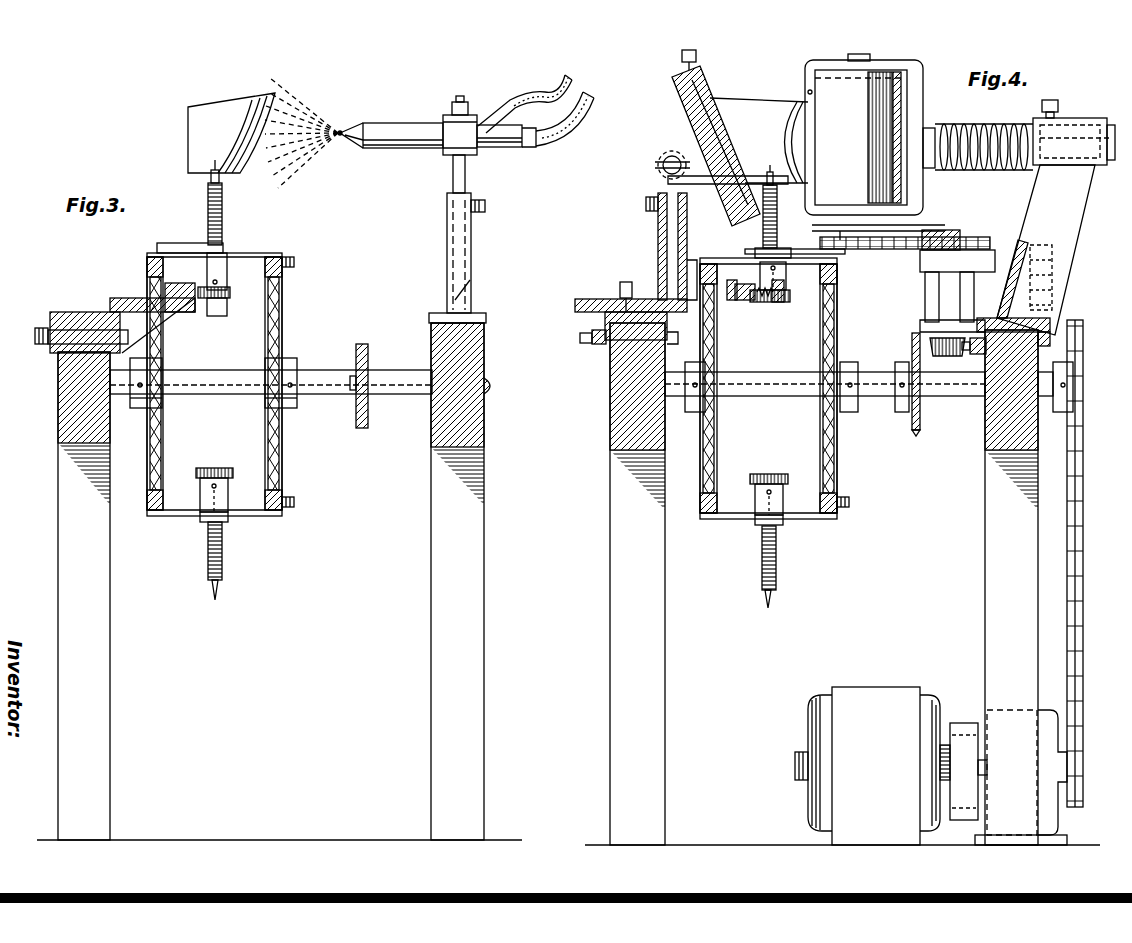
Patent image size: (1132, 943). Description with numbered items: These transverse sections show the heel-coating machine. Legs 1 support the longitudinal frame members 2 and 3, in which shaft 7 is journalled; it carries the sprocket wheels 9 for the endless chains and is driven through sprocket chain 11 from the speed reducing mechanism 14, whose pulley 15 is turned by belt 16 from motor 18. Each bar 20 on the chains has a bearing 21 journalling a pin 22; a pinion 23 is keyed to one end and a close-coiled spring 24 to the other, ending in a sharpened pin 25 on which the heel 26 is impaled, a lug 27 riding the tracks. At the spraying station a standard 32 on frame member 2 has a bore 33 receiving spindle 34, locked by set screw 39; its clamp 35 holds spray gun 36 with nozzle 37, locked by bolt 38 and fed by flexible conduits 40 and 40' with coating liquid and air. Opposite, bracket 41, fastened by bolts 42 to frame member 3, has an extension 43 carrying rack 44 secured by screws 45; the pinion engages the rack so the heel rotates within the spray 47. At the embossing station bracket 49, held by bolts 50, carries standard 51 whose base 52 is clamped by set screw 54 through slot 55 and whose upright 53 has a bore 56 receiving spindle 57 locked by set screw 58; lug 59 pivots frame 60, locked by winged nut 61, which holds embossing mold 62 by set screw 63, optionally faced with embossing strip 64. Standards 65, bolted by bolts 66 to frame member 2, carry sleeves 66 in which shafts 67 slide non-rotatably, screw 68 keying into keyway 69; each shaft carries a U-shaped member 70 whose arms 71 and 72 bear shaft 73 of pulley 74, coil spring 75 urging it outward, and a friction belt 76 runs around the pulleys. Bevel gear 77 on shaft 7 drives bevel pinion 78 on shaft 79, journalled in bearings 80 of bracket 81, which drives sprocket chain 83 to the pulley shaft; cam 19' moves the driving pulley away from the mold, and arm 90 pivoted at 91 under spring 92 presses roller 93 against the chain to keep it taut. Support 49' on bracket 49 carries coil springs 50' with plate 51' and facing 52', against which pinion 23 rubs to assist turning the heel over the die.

In FIG. 3, the legs 1 is at (432, 598).
In FIG. 4, the legs 1 is at (985, 598).
In FIG. 3, the frame member 2 is at (486, 428).
In FIG. 4, the frame member 2 is at (985, 442).
In FIG. 3, the frame member 3 is at (58, 421).
In FIG. 4, the frame member 3 is at (610, 411).
In FIG. 3, the shaft 7 is at (405, 392).
In FIG. 4, the shaft 7 is at (963, 396).
In FIG. 3, the sprocket wheels 9 is at (150, 283).
In FIG. 4, the sprocket wheels 9 is at (820, 416).
In FIG. 4, the sprocket chain 11 is at (1067, 637).
In FIG. 4, the speed reducing mechanism 14 is at (1002, 708).
In FIG. 4, the pulley 15 is at (962, 790).
In FIG. 4, the belt 16 is at (960, 746).
In FIG. 4, the motor 18 is at (863, 687).
In FIG. 3, the cam 19' is at (312, 375).
In FIG. 4, the cam 19' is at (862, 487).
In FIG. 3, the bars 20 is at (240, 514).
In FIG. 4, the bars 20 is at (758, 258).
In FIG. 3, the bearing 21 is at (228, 494).
In FIG. 4, the bearing 21 is at (786, 272).
In FIG. 3, the pin 22 is at (200, 517).
In FIG. 4, the pin 22 is at (755, 503).
In FIG. 3, the pinion 23 is at (232, 297).
In FIG. 4, the pinion 23 is at (790, 292).
In FIG. 3, the coil spring 24 is at (224, 205).
In FIG. 4, the coil spring 24 is at (763, 222).
In FIG. 3, the sharpened pin 25 is at (222, 178).
In FIG. 4, the sharpened pin 25 is at (768, 178).
In FIG. 3, the heel 26 is at (181, 150).
In FIG. 4, the heel 26 is at (766, 137).
In FIG. 3, the lug 27 is at (166, 245).
In FIG. 4, the lug 27 is at (790, 250).
In FIG. 3, the standard 32 is at (472, 240).
In FIG. 3, the central bore 33 is at (462, 292).
In FIG. 3, the spindle 34 is at (466, 170).
In FIG. 3, the clamp 35 is at (445, 118).
In FIG. 3, the spray gun 36 is at (385, 122).
In FIG. 3, the nozzle 37 is at (345, 128).
In FIG. 3, the bolt 38 is at (464, 100).
In FIG. 3, the set screw 39 is at (486, 206).
In FIG. 3, the flexible conduit 40 is at (561, 123).
In FIG. 3, the flexible conduit 40' is at (525, 92).
In FIG. 3, the bracket 41 is at (112, 300).
In FIG. 3, the bolts 42 is at (66, 312).
In FIG. 3, the extension 43 is at (182, 325).
In FIG. 3, the rack 44 is at (200, 302).
In FIG. 3, the screws 45 is at (180, 285).
In FIG. 3, the spray of coating material 47 is at (301, 133).
In FIG. 4, the bracket 49 is at (604, 331).
In FIG. 4, the support 49' is at (741, 350).
In FIG. 4, the bolts 50 is at (626, 354).
In FIG. 4, the coil springs 50' is at (742, 280).
In FIG. 4, the standard 51 is at (657, 264).
In FIG. 4, the plate 51' is at (774, 315).
In FIG. 4, the base portion 52 is at (615, 286).
In FIG. 4, the facing 52' is at (783, 309).
In FIG. 4, the upwardly extending portion 53 is at (688, 205).
In FIG. 4, the set screw 54 is at (624, 282).
In FIG. 4, the slot 55 is at (600, 312).
In FIG. 4, the central bore 56 is at (656, 284).
In FIG. 4, the spindle 57 is at (658, 221).
In FIG. 4, the set screw 58 is at (650, 200).
In FIG. 4, the lug 59 is at (680, 150).
In FIG. 4, the frame 60 is at (675, 72).
In FIG. 4, the winged nut 61 is at (663, 160).
In FIG. 4, the embossing mold 62 is at (706, 85).
In FIG. 4, the set screw 63 is at (683, 58).
In FIG. 4, the strip 64 is at (718, 112).
In FIG. 4, the standards 65 is at (1066, 258).
In FIG. 4, the sleeve 66 is at (1058, 118).
In FIG. 4, the shaft 67 is at (985, 162).
In FIG. 4, the screw 68 is at (1058, 100).
In FIG. 4, the keyway 69 is at (1070, 125).
In FIG. 4, the U-shaped member 70 is at (923, 68).
In FIG. 4, the arm 71 is at (905, 72).
In FIG. 4, the arm 72 is at (868, 215).
In FIG. 4, the shaft 73 is at (848, 56).
In FIG. 4, the pulley 74 is at (815, 78).
In FIG. 4, the coil spring 75 is at (970, 124).
In FIG. 4, the belt 76 is at (808, 91).
In FIG. 4, the bevel gear 77 is at (912, 420).
In FIG. 4, the bevel pinion 78 is at (930, 345).
In FIG. 4, the shaft 79 is at (925, 282).
In FIG. 4, the bearings 80 is at (920, 263).
In FIG. 4, the bracket 81 is at (960, 298).
In FIG. 4, the sprocket chain 83 is at (822, 232).
In FIG. 4, the arm 90 is at (995, 258).
In FIG. 4, the pivot 91 is at (1025, 252).
In FIG. 4, the spring 92 is at (1052, 277).
In FIG. 4, the roller 93 is at (942, 230).